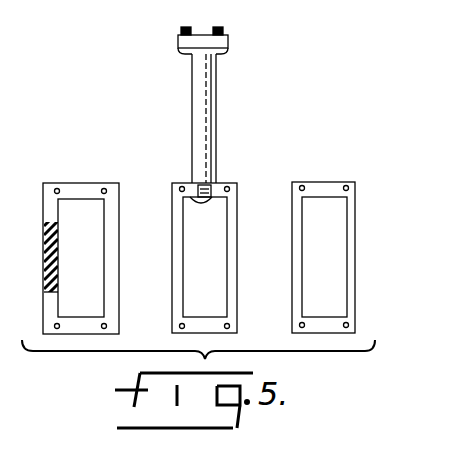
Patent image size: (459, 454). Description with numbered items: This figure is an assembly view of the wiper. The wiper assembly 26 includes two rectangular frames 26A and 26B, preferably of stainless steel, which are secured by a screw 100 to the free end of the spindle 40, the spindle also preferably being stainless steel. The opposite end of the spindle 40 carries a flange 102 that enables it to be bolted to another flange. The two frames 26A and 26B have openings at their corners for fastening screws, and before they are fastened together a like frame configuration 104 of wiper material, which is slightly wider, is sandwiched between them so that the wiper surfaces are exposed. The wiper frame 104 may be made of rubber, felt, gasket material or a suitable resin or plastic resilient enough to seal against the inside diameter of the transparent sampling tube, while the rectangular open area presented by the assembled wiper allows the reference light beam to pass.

The wiper assembly 26 is at (262, 156).
The rectangular frame 26A is at (237, 253).
The rectangular frame 26B is at (355, 250).
The spindle 40 is at (194, 112).
The screw 100 is at (203, 199).
The flange 102 is at (228, 45).
The frame configuration of wiper material 104 is at (80, 183).